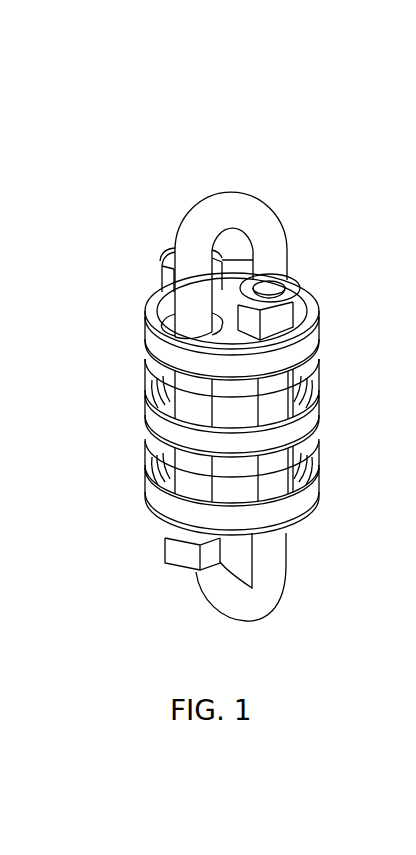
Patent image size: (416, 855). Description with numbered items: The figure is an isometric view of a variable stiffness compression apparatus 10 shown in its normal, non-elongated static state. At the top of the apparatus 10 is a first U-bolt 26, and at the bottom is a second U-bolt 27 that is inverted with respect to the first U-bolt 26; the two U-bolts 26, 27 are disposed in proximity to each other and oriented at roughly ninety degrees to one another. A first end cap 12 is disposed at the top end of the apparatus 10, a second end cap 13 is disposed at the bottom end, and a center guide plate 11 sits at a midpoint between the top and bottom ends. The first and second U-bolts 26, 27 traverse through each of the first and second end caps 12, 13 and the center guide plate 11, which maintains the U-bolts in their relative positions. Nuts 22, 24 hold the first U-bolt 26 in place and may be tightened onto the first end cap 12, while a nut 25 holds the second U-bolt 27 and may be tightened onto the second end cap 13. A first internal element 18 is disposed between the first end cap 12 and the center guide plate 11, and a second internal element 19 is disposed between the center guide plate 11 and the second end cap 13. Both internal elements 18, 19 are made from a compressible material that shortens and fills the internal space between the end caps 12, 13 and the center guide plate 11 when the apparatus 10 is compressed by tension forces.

The compression apparatus 10 is at (108, 254).
The center guide plate 11 is at (149, 430).
The first end cap 12 is at (149, 353).
The second end cap 13 is at (149, 490).
The first internal element 18 is at (247, 412).
The second internal element 19 is at (247, 490).
The nut 22 is at (292, 300).
The nut 24 is at (172, 256).
The nut 25 is at (190, 555).
The first U-bolt 26 is at (255, 205).
The second U-bolt 27 is at (267, 577).